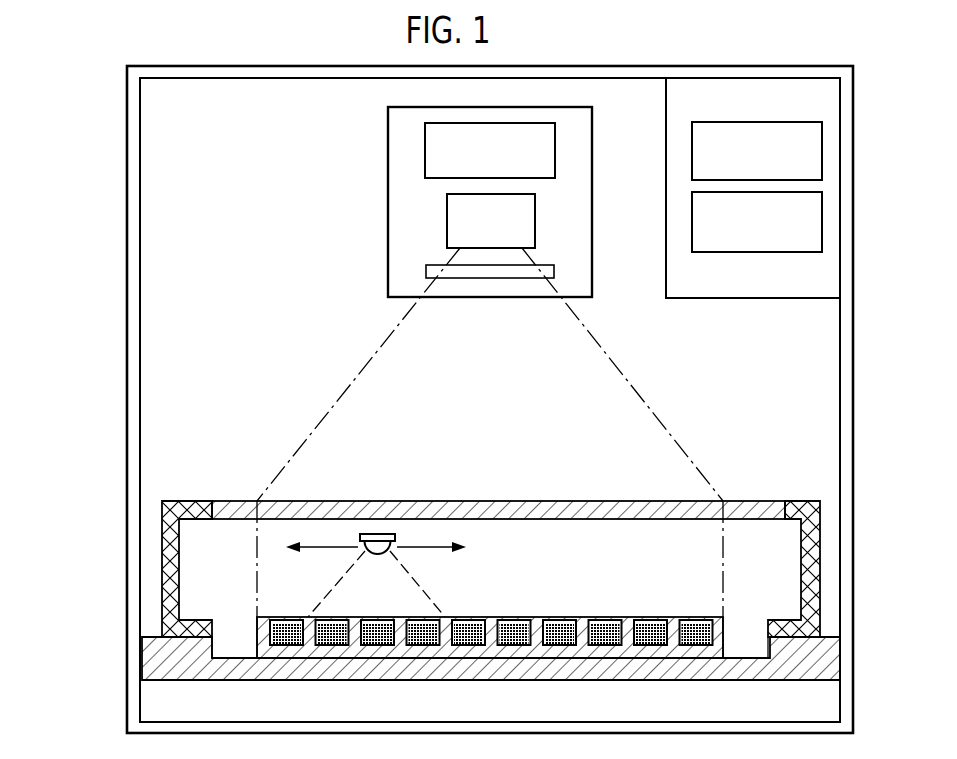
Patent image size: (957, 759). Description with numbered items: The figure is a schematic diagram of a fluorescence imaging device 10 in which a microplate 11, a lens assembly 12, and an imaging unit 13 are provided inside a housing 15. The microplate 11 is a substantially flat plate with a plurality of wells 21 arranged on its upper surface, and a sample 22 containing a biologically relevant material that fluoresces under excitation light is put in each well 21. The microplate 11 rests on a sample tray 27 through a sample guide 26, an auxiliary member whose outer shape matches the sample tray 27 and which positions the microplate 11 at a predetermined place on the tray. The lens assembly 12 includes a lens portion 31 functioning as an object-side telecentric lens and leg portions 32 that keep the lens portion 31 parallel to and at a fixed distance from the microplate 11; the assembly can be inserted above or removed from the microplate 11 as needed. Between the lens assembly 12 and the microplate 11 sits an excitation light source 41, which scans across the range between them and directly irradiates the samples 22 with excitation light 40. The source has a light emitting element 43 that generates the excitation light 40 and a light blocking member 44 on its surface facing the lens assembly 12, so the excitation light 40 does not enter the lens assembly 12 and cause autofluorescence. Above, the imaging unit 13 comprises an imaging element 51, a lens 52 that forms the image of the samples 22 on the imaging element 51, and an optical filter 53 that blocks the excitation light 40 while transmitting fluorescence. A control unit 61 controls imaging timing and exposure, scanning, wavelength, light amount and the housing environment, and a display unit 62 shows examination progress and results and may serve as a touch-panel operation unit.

The fluorescence imaging device 10 is at (90, 127).
The microplate 11 is at (490, 639).
The lens assembly 12 is at (488, 530).
The imaging unit 13 is at (388, 200).
The housing 15 is at (140, 190).
The well 21 is at (592, 620).
The sample 22 is at (512, 622).
The sample guide 26 is at (236, 653).
The sample tray 27 is at (640, 681).
The lens portion 31 is at (300, 509).
The leg portion 32 is at (167, 566).
The excitation light 40 is at (430, 597).
The excitation light source 41 is at (414, 492).
The light emitting element 43 is at (372, 556).
The light blocking member 44 is at (391, 537).
The imaging element 51 is at (555, 148).
The lens 52 is at (535, 218).
The optical filter 53 is at (554, 271).
The control unit 61 is at (822, 150).
The display unit 62 is at (822, 222).